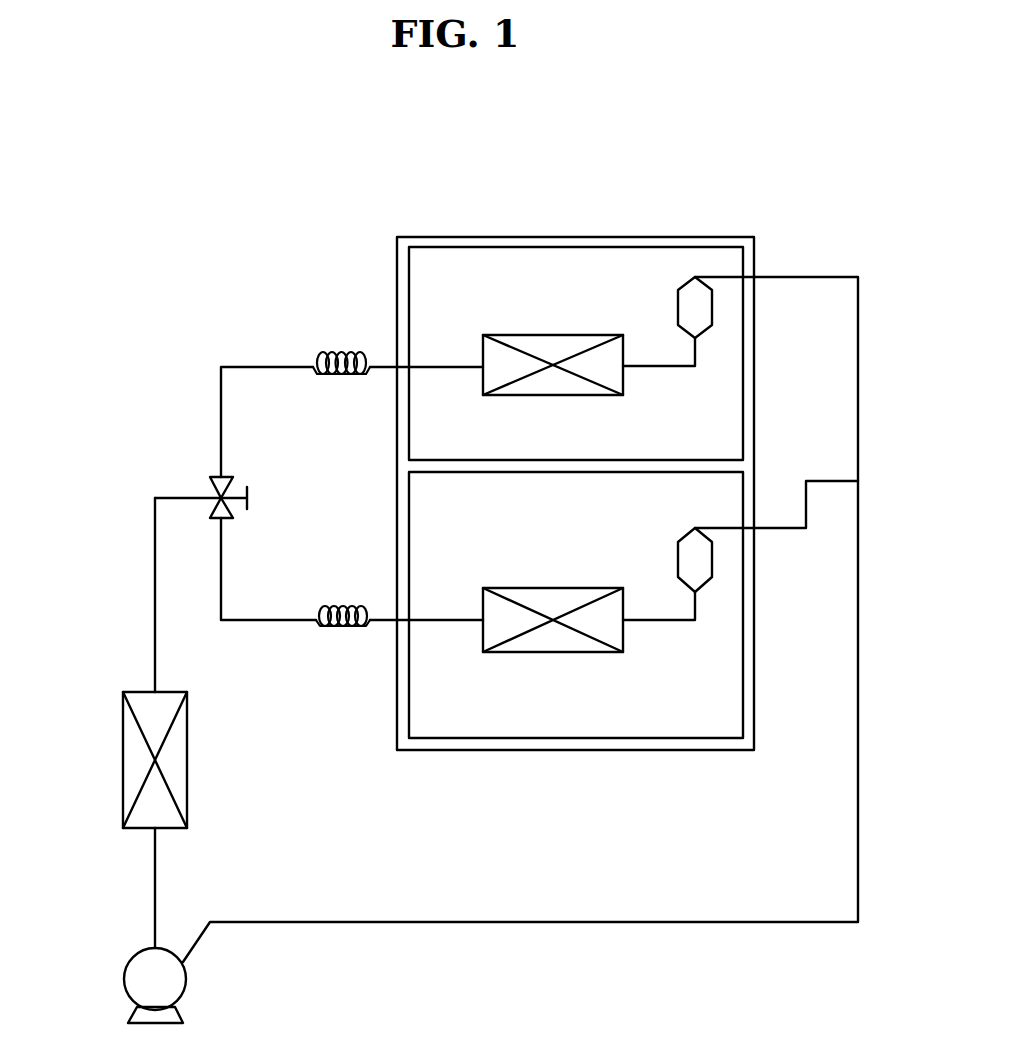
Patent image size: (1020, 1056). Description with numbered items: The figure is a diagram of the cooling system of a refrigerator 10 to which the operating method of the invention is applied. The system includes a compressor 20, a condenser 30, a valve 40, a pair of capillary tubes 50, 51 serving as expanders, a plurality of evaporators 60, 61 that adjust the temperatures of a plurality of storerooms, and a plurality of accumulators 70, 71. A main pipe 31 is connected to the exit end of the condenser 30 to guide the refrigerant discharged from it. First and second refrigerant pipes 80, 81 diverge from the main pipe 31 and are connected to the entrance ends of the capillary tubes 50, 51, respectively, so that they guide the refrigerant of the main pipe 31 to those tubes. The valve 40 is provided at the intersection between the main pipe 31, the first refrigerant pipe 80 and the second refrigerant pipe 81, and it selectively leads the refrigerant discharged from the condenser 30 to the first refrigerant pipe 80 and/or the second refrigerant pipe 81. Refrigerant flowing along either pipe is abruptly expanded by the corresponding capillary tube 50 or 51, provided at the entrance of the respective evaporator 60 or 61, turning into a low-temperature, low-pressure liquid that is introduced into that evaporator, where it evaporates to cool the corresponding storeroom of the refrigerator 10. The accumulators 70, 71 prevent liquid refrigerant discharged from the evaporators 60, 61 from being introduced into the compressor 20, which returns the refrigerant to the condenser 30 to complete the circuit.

The refrigerator 10 is at (732, 237).
The compressor 20 is at (125, 977).
The condenser 30 is at (123, 803).
The main pipe 31 is at (155, 585).
The valve 40 is at (212, 477).
The capillary tube 50 is at (330, 353).
The capillary tube 51 is at (340, 607).
The first evaporator 60 is at (543, 335).
The second evaporator 61 is at (527, 653).
The accumulator 70 is at (689, 280).
The accumulator 71 is at (712, 563).
The first refrigerant pipe 80 is at (248, 367).
The second refrigerant pipe 81 is at (260, 622).